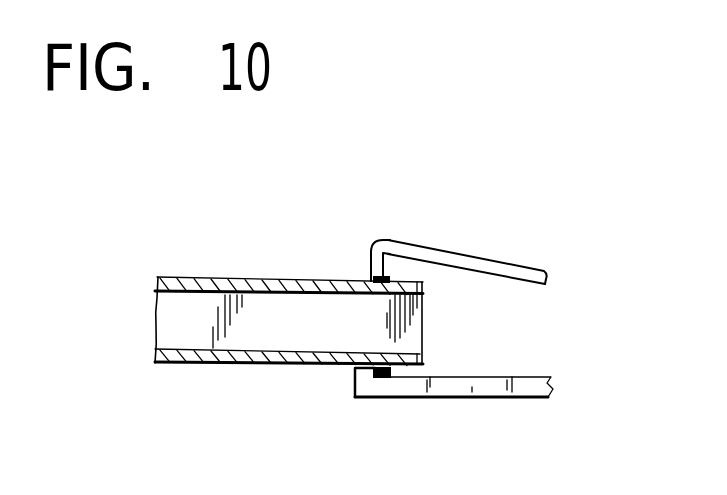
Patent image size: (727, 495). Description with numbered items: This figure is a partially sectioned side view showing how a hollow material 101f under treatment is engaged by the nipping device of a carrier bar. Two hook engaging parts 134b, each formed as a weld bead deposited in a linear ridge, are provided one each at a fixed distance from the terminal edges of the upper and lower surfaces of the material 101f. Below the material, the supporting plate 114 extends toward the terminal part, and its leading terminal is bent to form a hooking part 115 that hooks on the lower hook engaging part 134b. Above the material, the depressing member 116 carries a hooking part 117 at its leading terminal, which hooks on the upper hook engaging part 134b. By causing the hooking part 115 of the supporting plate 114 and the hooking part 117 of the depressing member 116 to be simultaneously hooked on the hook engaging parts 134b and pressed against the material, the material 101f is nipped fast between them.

The material under treatment 101f is at (225, 277).
The hooking part at the leading terminal of the depressing member 117 is at (367, 272).
The depressing member 116 is at (477, 262).
The hook engaging part 134b is at (390, 272).
The hooking part 115 is at (352, 369).
The supporting plate 114 is at (473, 398).